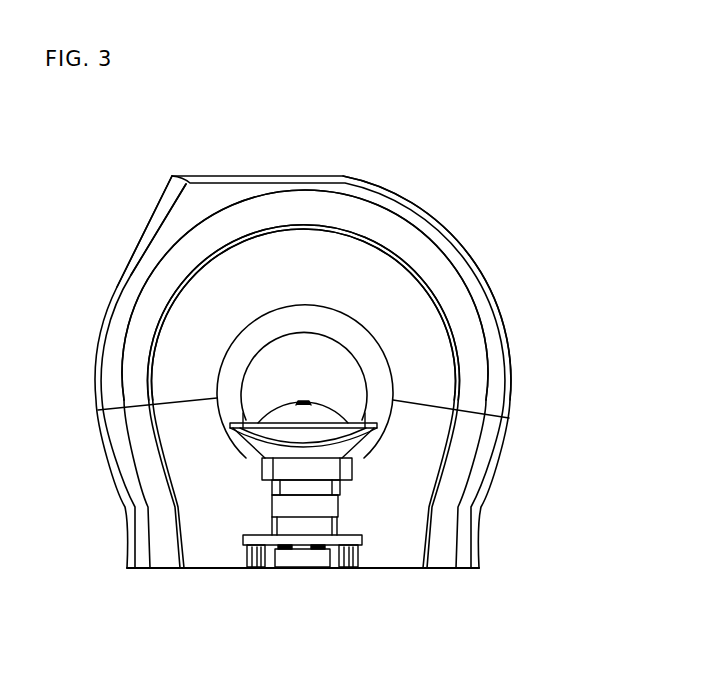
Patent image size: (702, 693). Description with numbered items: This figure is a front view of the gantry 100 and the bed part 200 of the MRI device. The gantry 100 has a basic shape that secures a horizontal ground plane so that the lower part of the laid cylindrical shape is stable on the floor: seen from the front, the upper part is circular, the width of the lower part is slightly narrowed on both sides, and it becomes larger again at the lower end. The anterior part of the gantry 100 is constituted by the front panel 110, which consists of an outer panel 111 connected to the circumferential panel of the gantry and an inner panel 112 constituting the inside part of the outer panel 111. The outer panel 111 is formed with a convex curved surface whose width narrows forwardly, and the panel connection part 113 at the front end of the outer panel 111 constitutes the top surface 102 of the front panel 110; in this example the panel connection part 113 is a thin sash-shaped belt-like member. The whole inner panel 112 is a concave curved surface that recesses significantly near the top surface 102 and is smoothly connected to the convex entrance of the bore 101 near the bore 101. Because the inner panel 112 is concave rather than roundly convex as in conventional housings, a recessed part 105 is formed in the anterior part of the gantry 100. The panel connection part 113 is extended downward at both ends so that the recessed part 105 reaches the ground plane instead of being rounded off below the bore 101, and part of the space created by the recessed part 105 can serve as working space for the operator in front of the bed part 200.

The gantry 100 is at (122, 272).
The bore 101 is at (262, 361).
The top surface 102 is at (260, 243).
The panel connection part 113 is at (303, 314).
The recessed part 105 is at (229, 303).
The front panel 110 is at (372, 232).
The outer panel 111 is at (467, 352).
The inner panel 112 is at (402, 320).
The bed part 200 is at (320, 470).